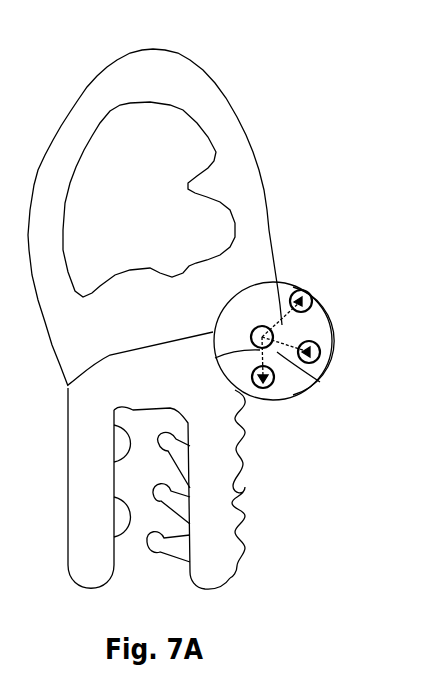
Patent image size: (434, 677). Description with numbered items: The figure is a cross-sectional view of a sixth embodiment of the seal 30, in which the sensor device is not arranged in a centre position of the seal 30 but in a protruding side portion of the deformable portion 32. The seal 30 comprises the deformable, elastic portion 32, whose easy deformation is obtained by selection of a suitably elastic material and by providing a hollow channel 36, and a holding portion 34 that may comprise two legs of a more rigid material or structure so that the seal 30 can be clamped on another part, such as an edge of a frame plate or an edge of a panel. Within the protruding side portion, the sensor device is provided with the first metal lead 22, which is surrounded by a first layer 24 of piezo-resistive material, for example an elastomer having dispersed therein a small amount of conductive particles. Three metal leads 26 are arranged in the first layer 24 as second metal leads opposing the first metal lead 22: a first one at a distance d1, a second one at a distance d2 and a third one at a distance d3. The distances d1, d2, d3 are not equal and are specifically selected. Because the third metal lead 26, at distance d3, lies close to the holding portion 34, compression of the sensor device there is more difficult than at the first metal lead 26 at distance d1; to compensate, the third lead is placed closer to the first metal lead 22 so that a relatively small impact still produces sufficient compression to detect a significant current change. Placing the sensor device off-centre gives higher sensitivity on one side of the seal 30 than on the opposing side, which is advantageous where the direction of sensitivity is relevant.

The seal 30 is at (220, 54).
The deformable portion 32 is at (156, 94).
The hollow channel 36 is at (142, 225).
The holding portion 34 is at (222, 534).
The first metal lead 22 is at (256, 329).
The second metal leads 26 is at (313, 301).
The first layer 24 is at (285, 372).
The first distance d1 is at (282, 327).
The second distance d2 is at (277, 352).
The third distance d3 is at (213, 358).